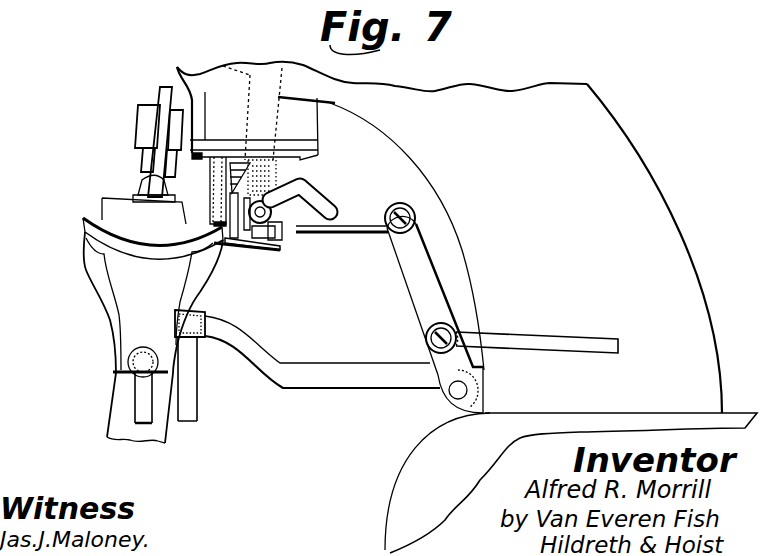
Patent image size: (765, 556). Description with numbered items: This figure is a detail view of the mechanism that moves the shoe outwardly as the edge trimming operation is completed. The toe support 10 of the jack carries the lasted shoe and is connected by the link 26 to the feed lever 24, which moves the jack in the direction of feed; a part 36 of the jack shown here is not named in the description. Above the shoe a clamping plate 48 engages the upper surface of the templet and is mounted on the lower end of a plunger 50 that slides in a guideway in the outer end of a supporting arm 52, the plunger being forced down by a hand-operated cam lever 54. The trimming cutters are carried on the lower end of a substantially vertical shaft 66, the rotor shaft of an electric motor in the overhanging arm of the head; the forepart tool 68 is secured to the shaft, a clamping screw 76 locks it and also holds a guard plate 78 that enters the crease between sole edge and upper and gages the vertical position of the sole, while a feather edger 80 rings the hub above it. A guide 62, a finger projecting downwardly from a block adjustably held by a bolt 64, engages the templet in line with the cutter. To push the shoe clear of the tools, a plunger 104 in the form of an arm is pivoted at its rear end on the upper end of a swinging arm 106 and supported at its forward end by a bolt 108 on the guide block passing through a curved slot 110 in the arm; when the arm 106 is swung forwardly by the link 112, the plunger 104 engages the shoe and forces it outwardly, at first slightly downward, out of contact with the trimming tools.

The toe support 10 is at (108, 422).
The feed lever 24 is at (283, 378).
The link 26 is at (182, 440).
The cap 36 is at (112, 208).
The clamping plate 48 is at (135, 192).
The plunger 50 is at (145, 156).
The supporting arm 52 is at (142, 120).
The cam lever 54 is at (160, 95).
The guide 62 is at (220, 222).
The bolt 64 is at (247, 103).
The shaft 66 is at (226, 60).
The forepart tool 68 is at (277, 247).
The clamping screw 76 is at (246, 252).
The guard plate 78 is at (275, 252).
The feather edger 80 is at (277, 234).
The plunger 104 is at (307, 236).
The swinging arm 106 is at (413, 287).
The bolt 108 is at (398, 205).
The curved slot 110 is at (302, 210).
The link 112 is at (553, 327).